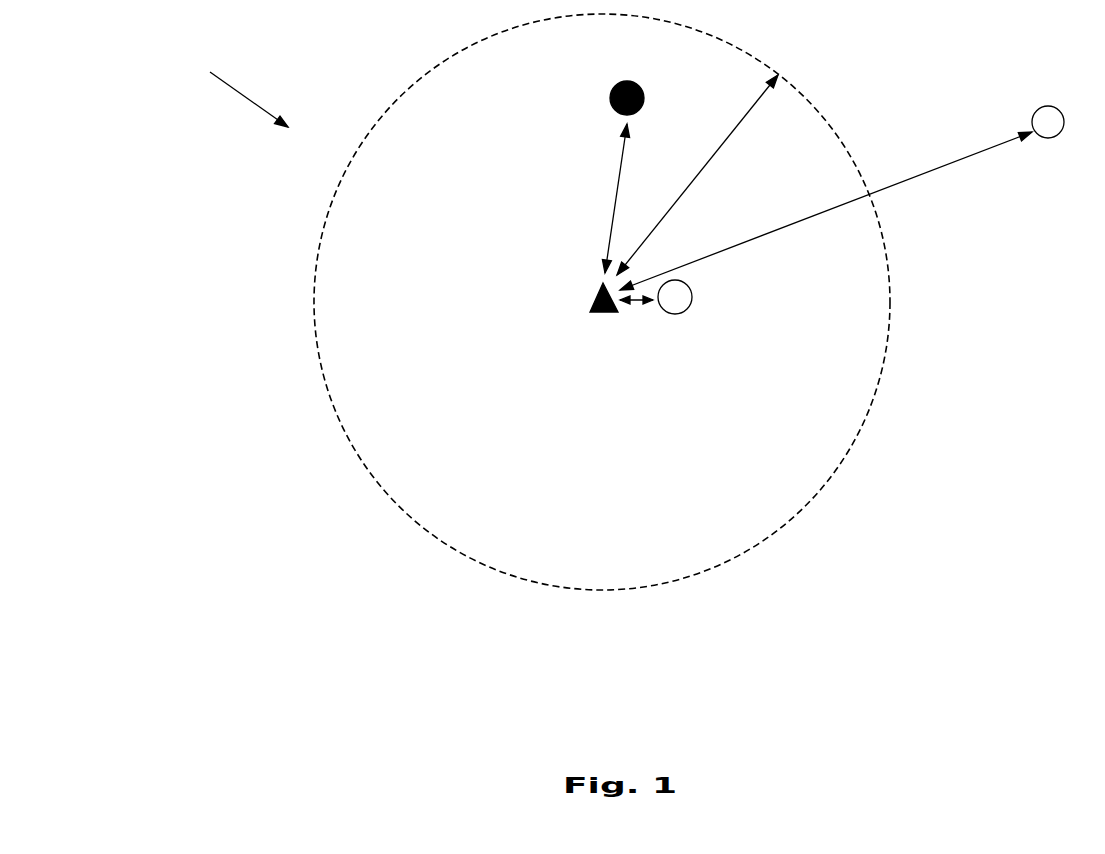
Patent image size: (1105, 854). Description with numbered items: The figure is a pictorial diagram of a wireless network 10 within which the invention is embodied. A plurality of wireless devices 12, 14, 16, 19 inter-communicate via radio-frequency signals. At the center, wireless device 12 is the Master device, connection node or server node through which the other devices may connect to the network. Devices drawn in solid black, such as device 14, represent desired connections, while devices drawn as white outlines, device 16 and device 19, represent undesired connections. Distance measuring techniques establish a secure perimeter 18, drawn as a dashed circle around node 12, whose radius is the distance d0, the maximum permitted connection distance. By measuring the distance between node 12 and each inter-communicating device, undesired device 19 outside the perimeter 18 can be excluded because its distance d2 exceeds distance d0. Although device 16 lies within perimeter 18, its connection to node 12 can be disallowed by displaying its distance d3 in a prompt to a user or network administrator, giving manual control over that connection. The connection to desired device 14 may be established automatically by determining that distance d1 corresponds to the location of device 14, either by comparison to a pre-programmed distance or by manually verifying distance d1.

The wireless network 10 is at (230, 85).
The wireless device 12 is at (598, 313).
The wireless device 14 is at (611, 110).
The wireless device 16 is at (690, 308).
The secure perimeter 18 is at (880, 380).
The wireless device 19 is at (1045, 138).
The maximum permitted connection distance d0 is at (702, 170).
The distance to desired device d1 is at (613, 197).
The distance to undesired device outside perimeter d2 is at (786, 226).
The distance to undesired device within perimeter d3 is at (631, 304).